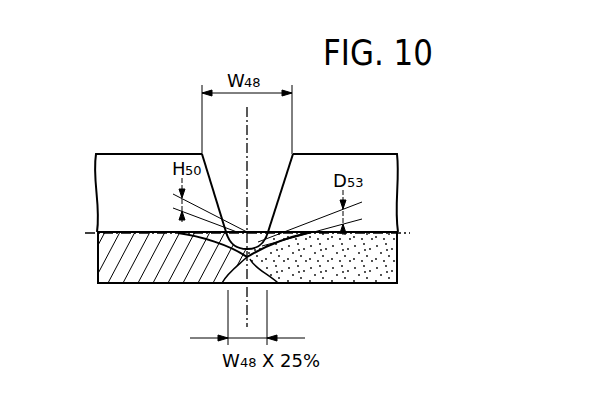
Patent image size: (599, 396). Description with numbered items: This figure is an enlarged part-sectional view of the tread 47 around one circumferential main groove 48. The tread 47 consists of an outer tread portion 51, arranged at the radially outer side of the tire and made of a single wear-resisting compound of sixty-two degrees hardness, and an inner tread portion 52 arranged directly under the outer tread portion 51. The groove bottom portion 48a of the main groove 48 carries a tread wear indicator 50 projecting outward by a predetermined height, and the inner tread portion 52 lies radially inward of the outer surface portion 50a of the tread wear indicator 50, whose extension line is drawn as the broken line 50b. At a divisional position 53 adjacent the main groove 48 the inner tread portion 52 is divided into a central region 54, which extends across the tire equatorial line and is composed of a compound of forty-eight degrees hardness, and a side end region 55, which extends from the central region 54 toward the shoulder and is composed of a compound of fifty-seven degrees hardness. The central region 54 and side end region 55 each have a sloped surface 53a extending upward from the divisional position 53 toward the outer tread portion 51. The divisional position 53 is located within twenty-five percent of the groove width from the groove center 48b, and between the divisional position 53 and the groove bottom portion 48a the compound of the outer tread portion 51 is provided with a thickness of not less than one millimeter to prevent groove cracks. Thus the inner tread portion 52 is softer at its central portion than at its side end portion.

The tread 47 is at (356, 153).
The circumferential main groove 48 is at (208, 172).
The groove bottom portion 48a is at (258, 253).
The groove center 48b is at (262, 141).
The tread wear indicator 50 is at (226, 228).
The outer surface portion 50a is at (257, 228).
The broken line 50b is at (127, 229).
The outer tread portion 51 is at (398, 167).
The inner tread portion 52 is at (399, 272).
The divisional position 53 is at (267, 284).
The sloped surface 53a is at (213, 243).
The central region 54 is at (334, 285).
The side end region 55 is at (170, 284).